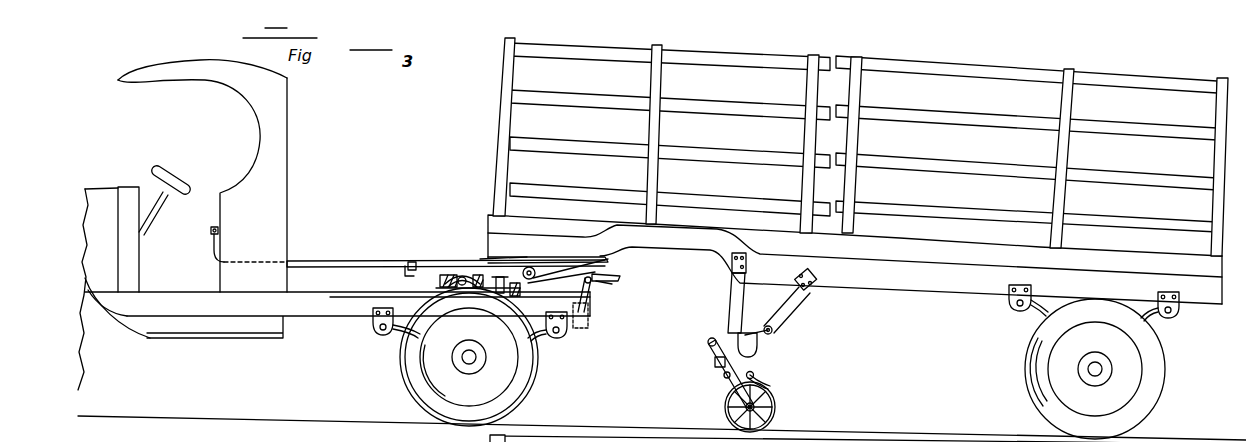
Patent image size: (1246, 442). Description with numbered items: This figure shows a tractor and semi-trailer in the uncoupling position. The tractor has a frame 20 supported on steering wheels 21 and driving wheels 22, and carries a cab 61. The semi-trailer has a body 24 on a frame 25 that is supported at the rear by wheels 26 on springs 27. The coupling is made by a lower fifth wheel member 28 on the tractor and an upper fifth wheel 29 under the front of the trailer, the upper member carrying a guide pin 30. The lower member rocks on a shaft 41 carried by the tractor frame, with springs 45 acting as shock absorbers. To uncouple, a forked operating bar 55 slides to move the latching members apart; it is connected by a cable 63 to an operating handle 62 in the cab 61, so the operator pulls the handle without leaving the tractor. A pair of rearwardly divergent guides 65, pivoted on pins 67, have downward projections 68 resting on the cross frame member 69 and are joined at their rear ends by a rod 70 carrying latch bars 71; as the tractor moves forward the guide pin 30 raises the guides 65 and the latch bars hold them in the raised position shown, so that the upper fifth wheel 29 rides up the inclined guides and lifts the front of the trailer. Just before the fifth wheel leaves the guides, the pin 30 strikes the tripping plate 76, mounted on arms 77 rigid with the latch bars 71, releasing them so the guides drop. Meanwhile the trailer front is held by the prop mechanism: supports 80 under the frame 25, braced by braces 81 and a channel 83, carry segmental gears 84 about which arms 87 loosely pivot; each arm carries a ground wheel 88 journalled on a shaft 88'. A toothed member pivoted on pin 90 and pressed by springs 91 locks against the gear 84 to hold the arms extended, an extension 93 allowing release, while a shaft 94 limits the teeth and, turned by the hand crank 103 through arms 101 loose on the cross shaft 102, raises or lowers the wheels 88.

The frame 20 is at (322, 306).
The steering wheels 21 is at (86, 364).
The driving wheels 22 is at (402, 364).
The body 24 is at (870, 215).
The frame 25 is at (917, 281).
The wheels 26 is at (1036, 376).
The springs 27 is at (1035, 316).
The lower fifth wheel member 28 is at (413, 264).
The upper fifth wheel 29 is at (483, 260).
The guide pin 30 is at (558, 257).
The shaft 41 is at (460, 284).
The springs 45 is at (439, 282).
The forked operating bar 55 is at (404, 272).
The tractor cab 61 is at (265, 207).
The operating handle 62 is at (211, 231).
The cable 63 is at (321, 261).
The guides 65 is at (570, 270).
The pins 67 is at (525, 268).
The projections 68 is at (505, 287).
The cross frame member 69 is at (515, 297).
The rod 70 is at (588, 276).
The latch bars 71 is at (592, 290).
The tripping plate 76 is at (607, 277).
The arms 77 is at (599, 280).
The supports 80 is at (743, 287).
The braces 81 is at (787, 299).
The channel 83 is at (714, 362).
The segmental gears 84 is at (756, 357).
The arms 87 is at (740, 385).
The wheel 88 is at (766, 407).
The shafts 88' is at (726, 413).
The pin 90 is at (725, 378).
The springs 91 is at (735, 286).
The extension 93 is at (762, 382).
The shaft 94 is at (754, 376).
The arms 101 is at (745, 322).
The shaft 102 is at (773, 332).
The hand crank 103 is at (709, 341).